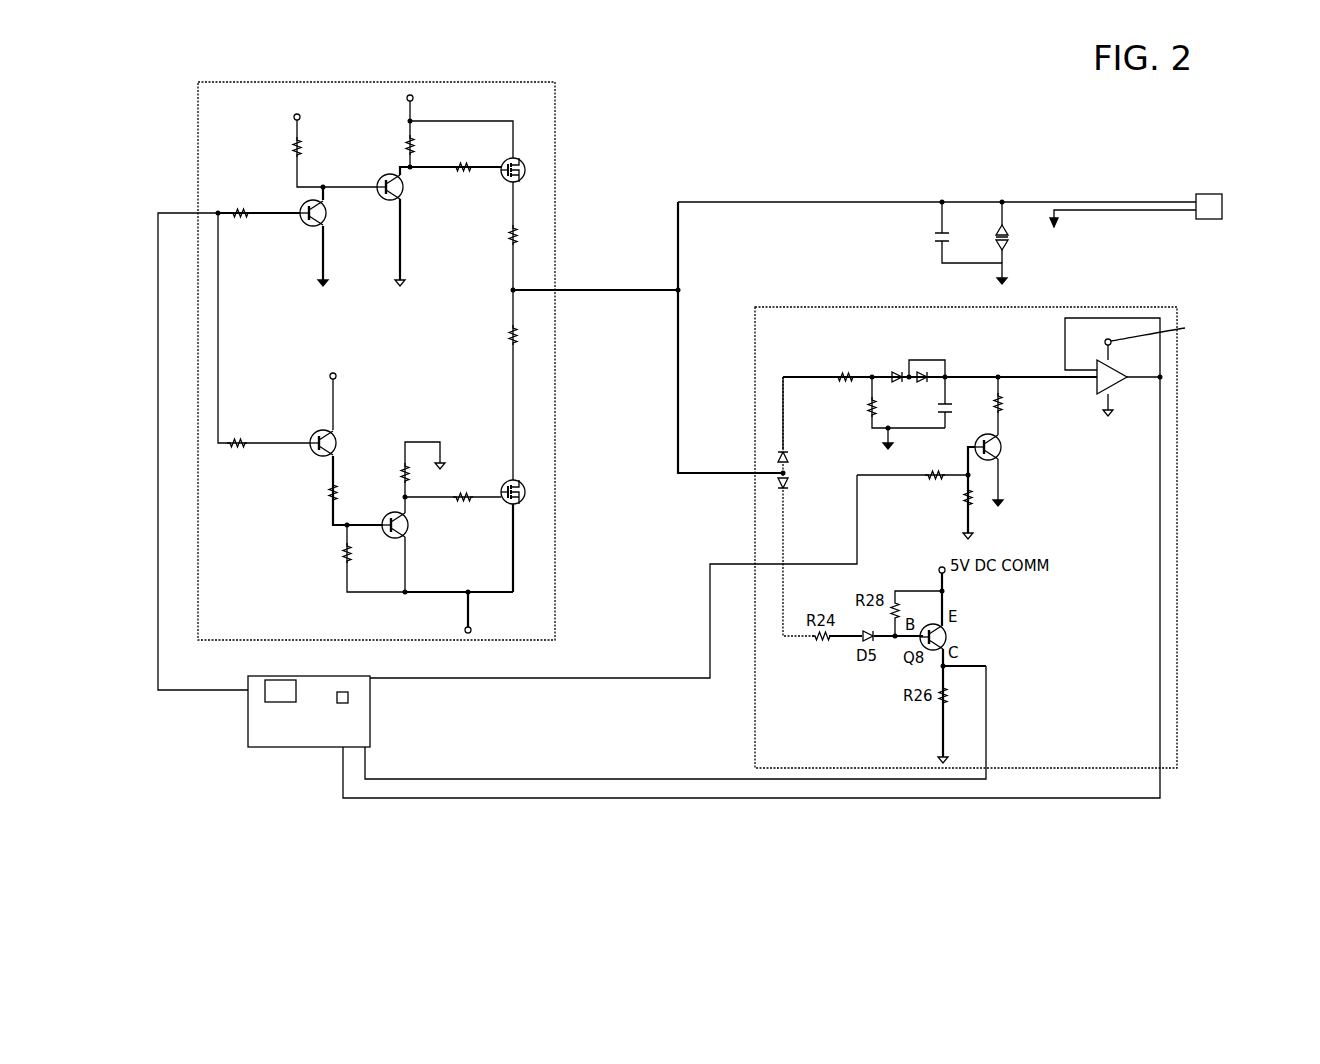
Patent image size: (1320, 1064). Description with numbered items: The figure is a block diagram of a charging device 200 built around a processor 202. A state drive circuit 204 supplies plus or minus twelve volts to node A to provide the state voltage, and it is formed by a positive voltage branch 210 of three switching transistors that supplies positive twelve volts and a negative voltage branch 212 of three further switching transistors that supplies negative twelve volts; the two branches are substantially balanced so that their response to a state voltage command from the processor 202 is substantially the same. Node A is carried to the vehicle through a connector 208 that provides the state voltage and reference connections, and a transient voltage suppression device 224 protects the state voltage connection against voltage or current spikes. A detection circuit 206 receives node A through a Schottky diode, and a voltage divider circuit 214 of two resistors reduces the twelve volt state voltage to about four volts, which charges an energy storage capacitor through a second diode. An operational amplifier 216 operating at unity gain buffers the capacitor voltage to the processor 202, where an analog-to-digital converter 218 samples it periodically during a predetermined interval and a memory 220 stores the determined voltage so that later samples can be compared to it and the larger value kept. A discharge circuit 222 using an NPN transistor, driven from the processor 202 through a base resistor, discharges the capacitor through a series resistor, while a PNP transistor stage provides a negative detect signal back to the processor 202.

The charging device 200 is at (603, 160).
The processor 202 is at (302, 748).
The state drive circuit 204 is at (283, 82).
The detection circuit 206 is at (1100, 307).
The connector 208 is at (1210, 193).
The positive voltage branch 210 is at (423, 237).
The negative voltage branch 212 is at (457, 462).
The voltage divider circuit 214 is at (817, 408).
The operational amplifier 216 is at (1112, 388).
The analog-to-digital converter 218 is at (348, 697).
The memory 220 is at (280, 676).
The discharge circuit 222 is at (1023, 452).
The transient voltage suppression device 224 is at (1010, 245).